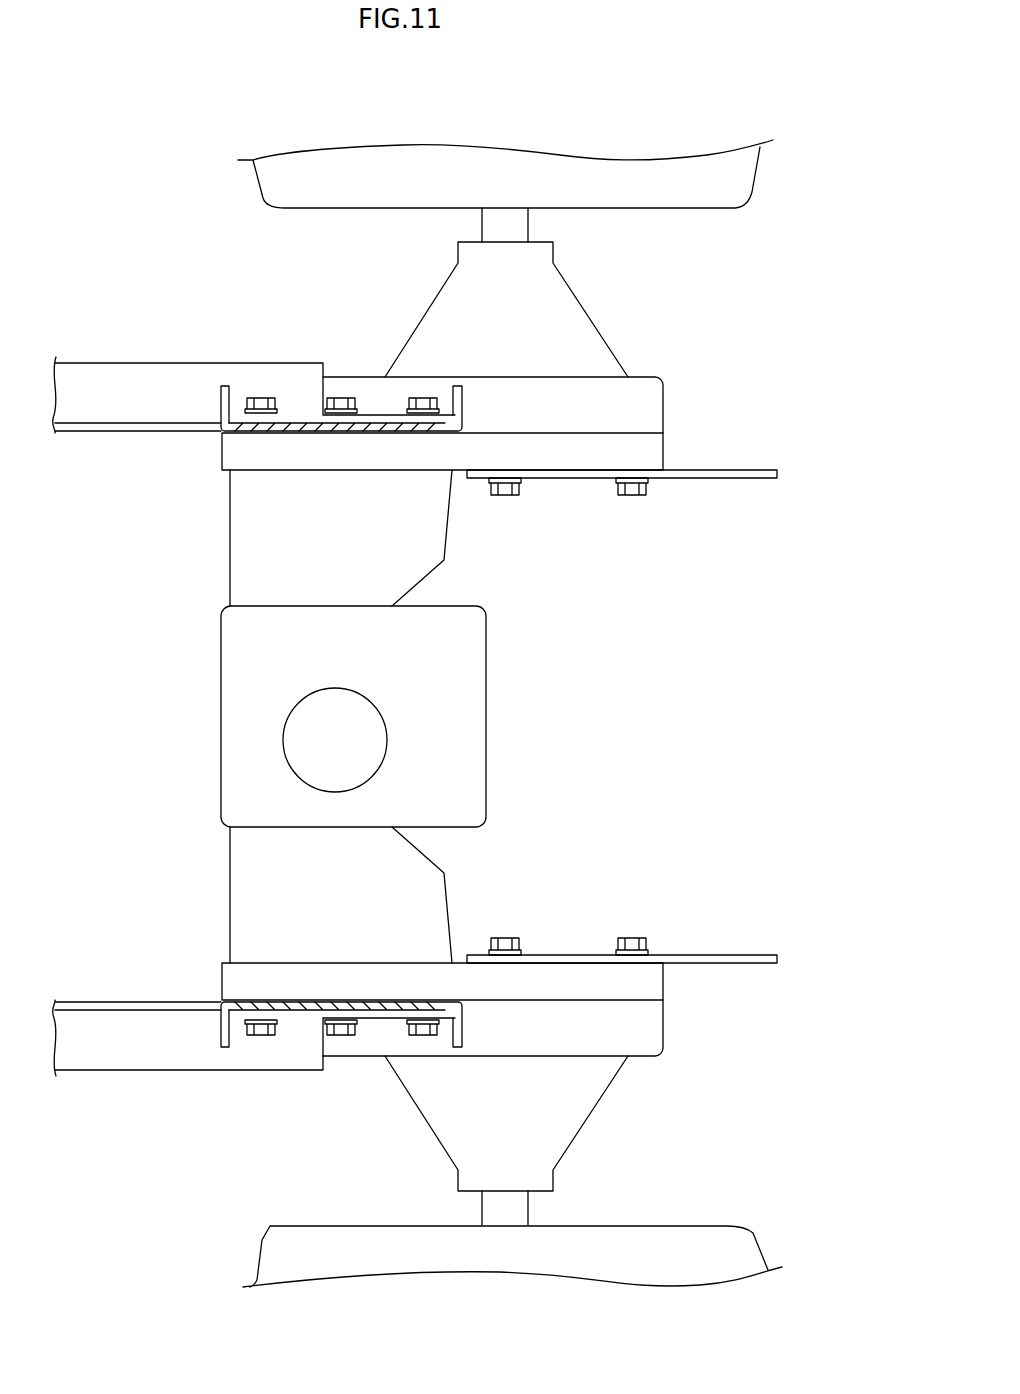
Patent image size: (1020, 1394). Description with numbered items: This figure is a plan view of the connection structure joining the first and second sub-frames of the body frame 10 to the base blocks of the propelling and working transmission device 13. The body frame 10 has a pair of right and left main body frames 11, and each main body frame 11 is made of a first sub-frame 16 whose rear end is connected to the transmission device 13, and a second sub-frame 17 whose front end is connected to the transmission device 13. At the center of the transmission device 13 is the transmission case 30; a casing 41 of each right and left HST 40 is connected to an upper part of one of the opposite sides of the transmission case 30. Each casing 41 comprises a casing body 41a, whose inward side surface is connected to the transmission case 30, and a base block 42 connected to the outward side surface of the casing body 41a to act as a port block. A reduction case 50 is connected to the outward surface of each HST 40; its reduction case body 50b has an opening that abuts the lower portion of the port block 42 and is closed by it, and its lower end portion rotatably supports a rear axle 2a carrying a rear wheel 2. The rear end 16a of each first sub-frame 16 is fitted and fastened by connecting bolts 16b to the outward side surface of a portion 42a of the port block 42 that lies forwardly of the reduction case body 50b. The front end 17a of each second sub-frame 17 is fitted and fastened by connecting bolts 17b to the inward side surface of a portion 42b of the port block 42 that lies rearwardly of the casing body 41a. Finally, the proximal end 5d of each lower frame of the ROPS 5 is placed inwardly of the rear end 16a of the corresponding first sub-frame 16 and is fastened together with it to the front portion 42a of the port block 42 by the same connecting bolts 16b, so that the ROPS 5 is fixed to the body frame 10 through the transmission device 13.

The rear wheel 2 is at (674, 197).
The rear axle 2a is at (528, 218).
The ROPS 5 is at (341, 719).
The proximal end of lower frame 5d is at (303, 418).
The body frame 10 is at (190, 352).
The main body frame 11 is at (417, 721).
The propelling and working transmission device 13 is at (164, 715).
The first sub-frame 16 is at (97, 375).
The rear end of first sub-frame 16a is at (335, 418).
The connecting bolt 16b is at (258, 392).
The second sub-frame 17 is at (728, 470).
The front end of second sub-frame 17a is at (533, 483).
The connecting bolt 17b is at (503, 497).
The transmission case 30 is at (470, 712).
The HST 40 is at (219, 572).
The casing 41 is at (375, 716).
The casing body 41a is at (240, 515).
The base block 42 is at (228, 455).
The front portion of port block 42a is at (400, 418).
The rear portion of port block 42b is at (587, 480).
The reduction case 50 is at (601, 313).
The reduction case body 50b is at (363, 387).